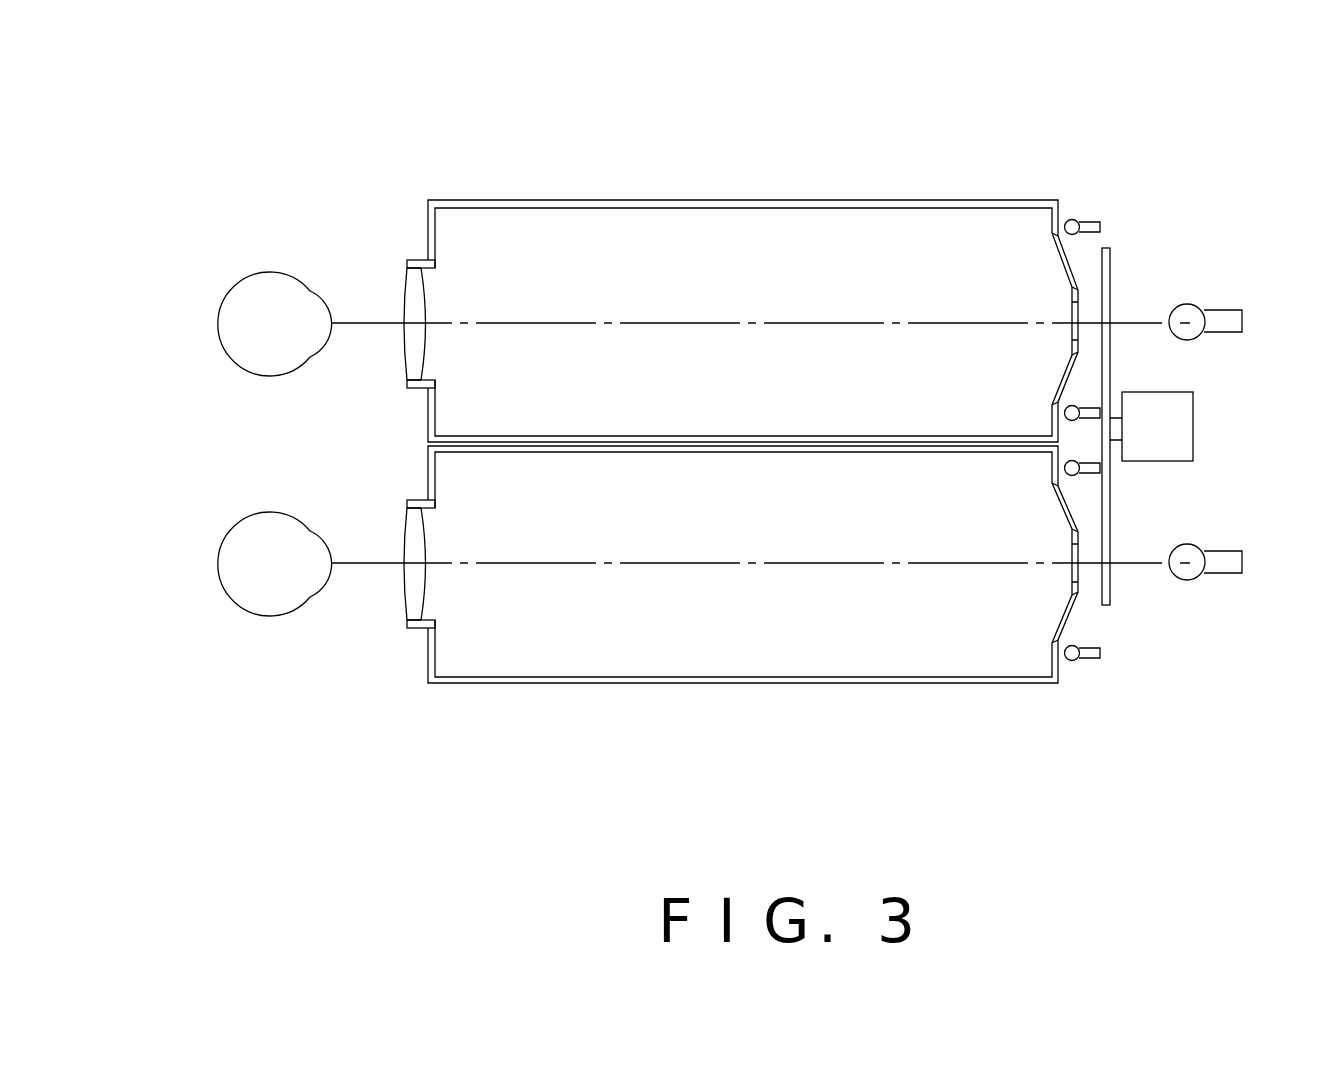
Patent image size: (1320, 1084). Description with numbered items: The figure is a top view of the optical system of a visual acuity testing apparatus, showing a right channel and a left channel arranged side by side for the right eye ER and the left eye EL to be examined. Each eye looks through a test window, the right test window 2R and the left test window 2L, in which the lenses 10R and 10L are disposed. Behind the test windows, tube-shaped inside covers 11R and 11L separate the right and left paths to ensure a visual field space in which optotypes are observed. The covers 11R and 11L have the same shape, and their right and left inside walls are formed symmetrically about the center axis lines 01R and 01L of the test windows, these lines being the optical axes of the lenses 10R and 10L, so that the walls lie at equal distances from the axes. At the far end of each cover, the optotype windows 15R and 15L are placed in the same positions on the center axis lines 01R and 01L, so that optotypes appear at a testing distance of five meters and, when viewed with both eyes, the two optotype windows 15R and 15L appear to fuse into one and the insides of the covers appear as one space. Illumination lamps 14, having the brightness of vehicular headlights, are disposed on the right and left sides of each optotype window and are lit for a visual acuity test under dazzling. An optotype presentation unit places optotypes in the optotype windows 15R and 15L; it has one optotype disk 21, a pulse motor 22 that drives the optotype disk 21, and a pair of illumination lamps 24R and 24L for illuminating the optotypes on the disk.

The left eye EL is at (226, 292).
The right eye ER is at (240, 606).
The left test window 2L is at (393, 316).
The right test window 2R is at (397, 581).
The left lens 10L is at (405, 270).
The right lens 10R is at (405, 620).
The left inside cover 11L is at (568, 200).
The right inside cover 11R is at (640, 684).
The left center axis line 01L is at (668, 323).
The right center axis line 01R is at (680, 562).
The left optotype window 15L is at (1066, 316).
The right optotype window 15R is at (1068, 567).
The illumination lamps 14 is at (1088, 222).
The optotype disk 21 is at (1112, 580).
The pulse motor 22 is at (1190, 438).
The left illumination lamp 24L is at (1217, 318).
The right illumination lamp 24R is at (1217, 563).